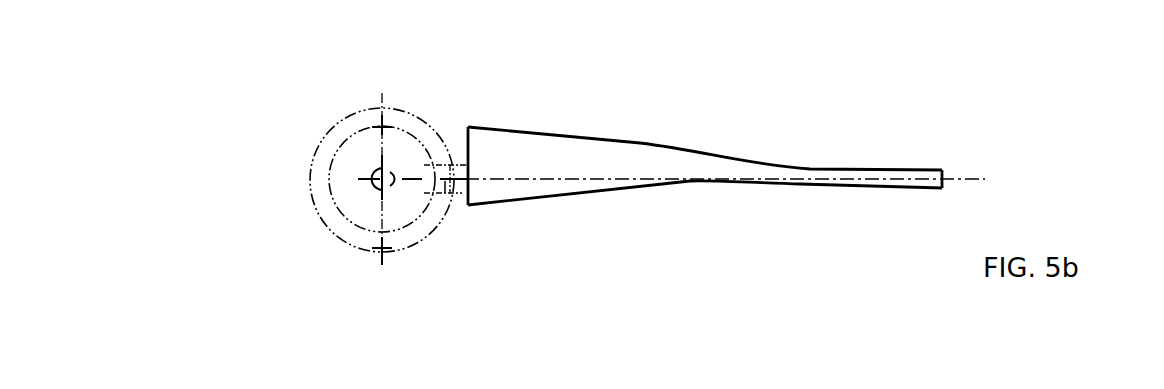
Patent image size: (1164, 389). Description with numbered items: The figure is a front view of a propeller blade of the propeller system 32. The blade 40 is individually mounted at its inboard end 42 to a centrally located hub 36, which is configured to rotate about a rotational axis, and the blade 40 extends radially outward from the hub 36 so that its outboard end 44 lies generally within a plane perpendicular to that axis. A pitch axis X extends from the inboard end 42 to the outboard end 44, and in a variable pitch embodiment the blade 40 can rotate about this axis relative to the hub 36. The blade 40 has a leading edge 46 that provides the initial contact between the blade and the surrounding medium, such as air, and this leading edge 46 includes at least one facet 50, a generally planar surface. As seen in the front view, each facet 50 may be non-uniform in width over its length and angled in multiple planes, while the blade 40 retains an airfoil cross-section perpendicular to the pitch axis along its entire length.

The propeller system 32 is at (277, 263).
The hub 36 is at (328, 143).
The propeller blade 40 is at (1028, 133).
The inboard end 42 is at (467, 134).
The outboard end 44 is at (943, 168).
The leading edge 46 is at (682, 168).
The facet 50 is at (888, 183).